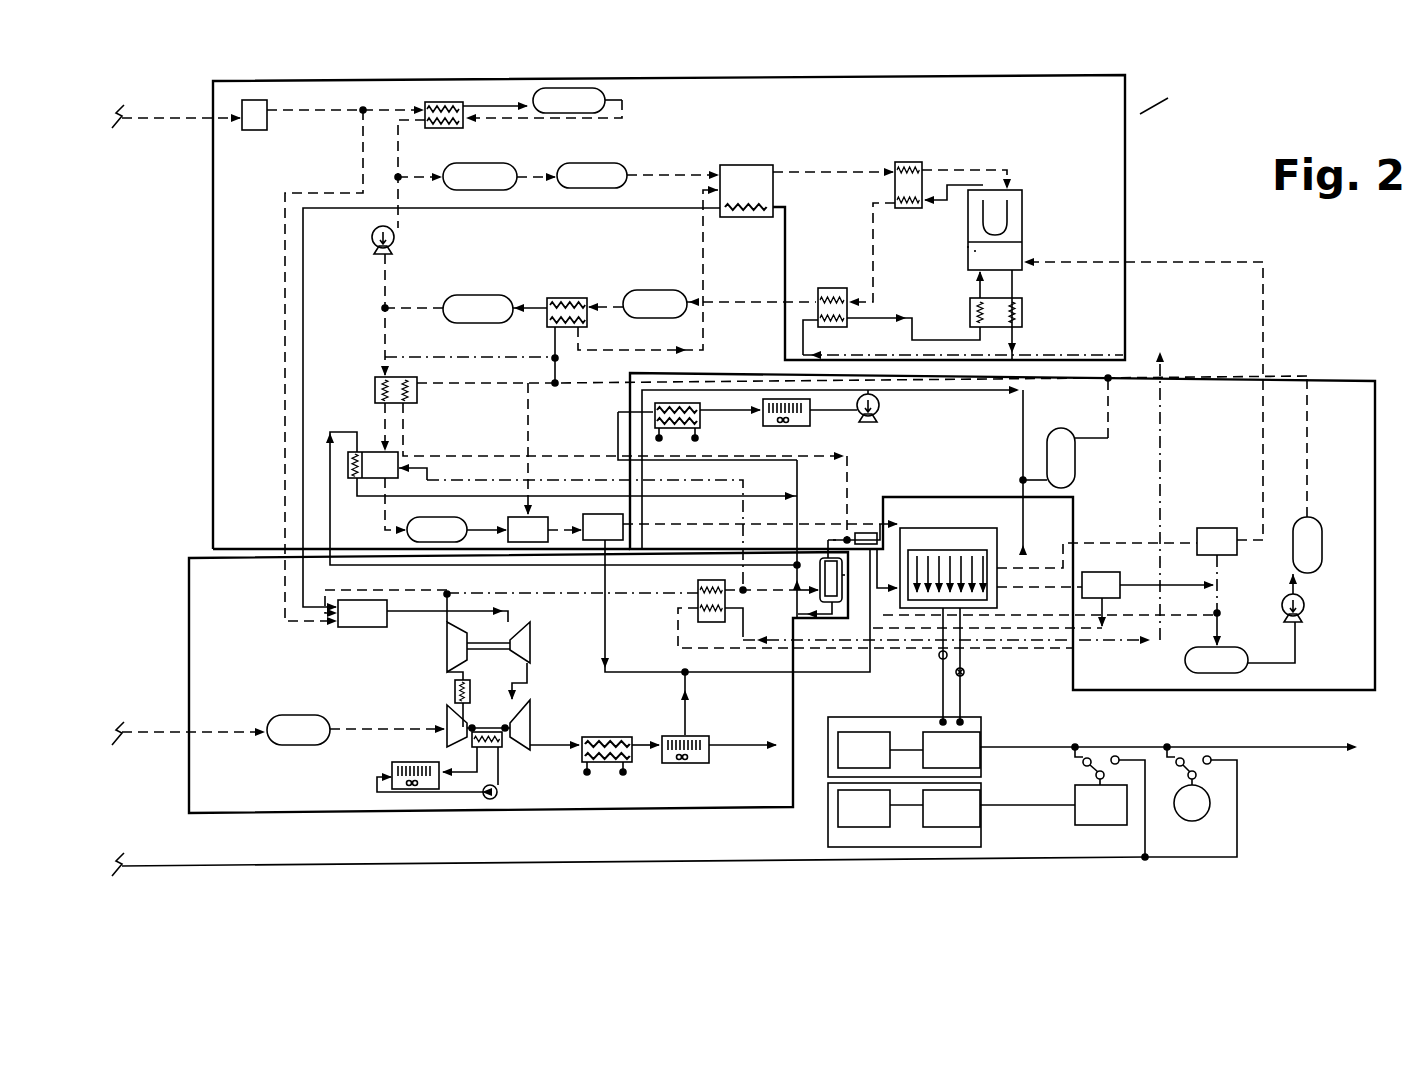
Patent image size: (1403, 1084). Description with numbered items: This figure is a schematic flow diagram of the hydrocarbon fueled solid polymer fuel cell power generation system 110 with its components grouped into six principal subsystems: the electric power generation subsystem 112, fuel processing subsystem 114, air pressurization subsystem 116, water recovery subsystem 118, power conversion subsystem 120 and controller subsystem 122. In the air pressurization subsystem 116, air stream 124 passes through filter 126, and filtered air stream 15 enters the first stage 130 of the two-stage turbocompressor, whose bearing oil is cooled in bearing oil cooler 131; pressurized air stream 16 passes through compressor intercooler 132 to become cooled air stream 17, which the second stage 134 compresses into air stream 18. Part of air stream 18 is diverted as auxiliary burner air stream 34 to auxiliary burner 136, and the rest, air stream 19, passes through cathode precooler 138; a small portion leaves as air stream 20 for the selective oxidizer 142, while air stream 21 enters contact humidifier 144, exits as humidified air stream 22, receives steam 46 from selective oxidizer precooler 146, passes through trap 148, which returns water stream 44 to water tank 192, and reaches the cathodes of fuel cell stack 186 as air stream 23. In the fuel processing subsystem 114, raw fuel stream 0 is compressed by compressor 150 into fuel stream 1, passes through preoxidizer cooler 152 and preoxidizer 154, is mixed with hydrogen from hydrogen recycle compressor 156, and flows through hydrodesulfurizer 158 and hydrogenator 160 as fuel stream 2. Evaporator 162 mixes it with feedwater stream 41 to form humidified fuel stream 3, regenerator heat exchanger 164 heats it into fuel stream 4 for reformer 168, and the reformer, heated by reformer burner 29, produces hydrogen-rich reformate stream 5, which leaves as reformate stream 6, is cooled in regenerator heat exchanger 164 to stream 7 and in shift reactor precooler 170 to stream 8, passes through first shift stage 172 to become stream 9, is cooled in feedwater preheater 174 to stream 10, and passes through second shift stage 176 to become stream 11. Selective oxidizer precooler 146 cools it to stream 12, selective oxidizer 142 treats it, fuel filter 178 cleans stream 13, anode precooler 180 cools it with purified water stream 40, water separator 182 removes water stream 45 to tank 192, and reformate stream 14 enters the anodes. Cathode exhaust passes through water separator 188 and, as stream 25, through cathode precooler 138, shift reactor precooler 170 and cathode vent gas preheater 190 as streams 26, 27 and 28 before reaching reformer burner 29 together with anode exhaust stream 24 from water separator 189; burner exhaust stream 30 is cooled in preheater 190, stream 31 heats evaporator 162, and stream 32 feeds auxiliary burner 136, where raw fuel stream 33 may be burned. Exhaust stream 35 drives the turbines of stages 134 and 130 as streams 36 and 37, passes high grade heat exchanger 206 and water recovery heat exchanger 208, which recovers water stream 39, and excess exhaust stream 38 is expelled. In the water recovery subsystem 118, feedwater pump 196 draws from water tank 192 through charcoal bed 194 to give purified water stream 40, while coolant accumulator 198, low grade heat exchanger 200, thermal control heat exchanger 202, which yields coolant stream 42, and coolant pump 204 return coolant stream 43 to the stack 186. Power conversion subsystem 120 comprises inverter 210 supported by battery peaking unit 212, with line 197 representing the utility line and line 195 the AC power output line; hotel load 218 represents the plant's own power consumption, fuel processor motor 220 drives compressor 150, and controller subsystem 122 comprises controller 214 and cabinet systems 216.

The raw fuel stream 0 is at (176, 111).
The compressed fuel stream 1 is at (345, 99).
The fuel stream 2 is at (673, 165).
The humidified fuel stream 3 is at (833, 162).
The fuel stream 4 is at (966, 170).
The hydrogen-rich reformate fuel gas stream 5 is at (956, 239).
The reformate fuel stream 6 is at (953, 190).
The reformate fuel stream 7 is at (872, 254).
The reformate fuel stream 8 is at (751, 291).
The reformate fuel stream 9 is at (605, 296).
The reformate fuel stream 10 is at (530, 296).
The reformate fuel stream 11 is at (412, 296).
The cooled reformate fuel stream 12 is at (377, 427).
The reformate fuel stream 13 is at (385, 506).
The reformate fuel stream 14 is at (760, 515).
The filtered air stream 15 is at (387, 717).
The pressurized air stream 16 is at (487, 724).
The cooled pressurized air stream 17 is at (470, 690).
The pressurized air stream 18 is at (437, 606).
The air stream 19 is at (572, 583).
The air stream 20 is at (571, 524).
The air stream 21 is at (772, 580).
The humidified air stream 22 is at (819, 538).
The pressurized humidified air stream 23 is at (891, 570).
The anode exhaust stream 24 is at (1143, 388).
The dewatered cathode exhaust stream 25 is at (1045, 496).
The cathode exhaust stream 26 is at (969, 666).
The cathode exhaust stream 27 is at (913, 330).
The cathode exhaust stream 28 is at (964, 285).
The reformer burner 29 is at (992, 256).
The burner exhaust stream 30 is at (1027, 315).
The cooled burner exhaust stream 31 is at (801, 280).
The cooled burner exhaust stream 32 is at (552, 413).
The raw fuel stream 33 is at (306, 367).
The auxiliary burner air stream 34 is at (386, 592).
The exhaust stream 35 is at (447, 605).
The exhaust stream 36 is at (531, 681).
The cooled exhaust stream 37 is at (555, 735).
The cooled excess auxiliary burner exhaust stream 38 is at (743, 731).
The liquid water stream 39 is at (700, 703).
The purified water stream 40 is at (846, 356).
The feedwater stream 41 is at (648, 270).
The coolant water stream 42 is at (730, 399).
The coolant stream 43 is at (1013, 474).
The water stream 44 is at (858, 573).
The water stream 45 is at (735, 607).
The steam 46 is at (626, 473).
The power generation system 110 is at (1168, 98).
The electric power generation subsystem 112 is at (997, 600).
The fuel processing subsystem 114 is at (1125, 152).
The air pressurization subsystem 116 is at (540, 812).
The water recovery subsystem 118 is at (1333, 381).
The power conversion subsystem 120 is at (828, 768).
The controller subsystem 122 is at (890, 847).
The air stream 124 is at (158, 731).
The filter 126 is at (300, 727).
The first stage of two-stage turbocompressor 130 is at (447, 740).
The turbocompressor bearing oil cooler 131 is at (392, 780).
The compressor intercooler 132 is at (455, 690).
The second stage of two-stage turbocompressor 134 is at (460, 640).
The auxiliary burner 136 is at (346, 613).
The cathode precooler 138 is at (699, 600).
The selective oxidizer 142 is at (372, 450).
The contact humidifier 144 is at (832, 600).
The selective oxidizer precooler 146 is at (417, 388).
The trap 148 is at (866, 533).
The compressor 150 is at (258, 112).
The preoxidizer cooler 152 is at (450, 102).
The preoxidizer 154 is at (593, 97).
The hydrogen recycle compressor 156 is at (395, 238).
The hydrodesulfurizer 158 is at (490, 170).
The hydrogenator 160 is at (607, 170).
The evaporator 162 is at (755, 170).
The regenerator heat exchanger 164 is at (908, 162).
The reformer 168 is at (1000, 192).
The shift reactor precooler 170 is at (832, 288).
The first stage of two-stage shift reactor convertor 172 is at (658, 290).
The feedwater preheater 174 is at (563, 298).
The second stage of two-stage shift reactor convertor 176 is at (480, 295).
The fuel filter 178 is at (445, 528).
The anode precooler 180 is at (528, 517).
The water separator 182 is at (597, 541).
The fuel cell stack 186 is at (950, 550).
The water separator 188 is at (1097, 595).
The water separator 189 is at (1208, 545).
The cathode vent gas preheater 190 is at (1015, 315).
The water tank 192 is at (1220, 673).
The charcoal bed 194 is at (1312, 530).
The AC power output line 195 is at (1292, 746).
The feedwater pump 196 is at (1306, 608).
The utility line 197 is at (238, 865).
The coolant accumulator 198 is at (1070, 460).
The low grade heat exchanger 200 is at (653, 405).
The thermal control heat exchanger 202 is at (773, 426).
The coolant pump 204 is at (880, 410).
The high grade heat exchanger 206 is at (594, 737).
The water recovery heat exchanger 208 is at (700, 763).
The inverter 210 is at (963, 748).
The battery peaking unit 212 is at (880, 732).
The controller 214 is at (950, 827).
The cabinet systems 216 is at (850, 827).
The hotel load 218 is at (1097, 825).
The fuel processor motor 220 is at (1203, 803).